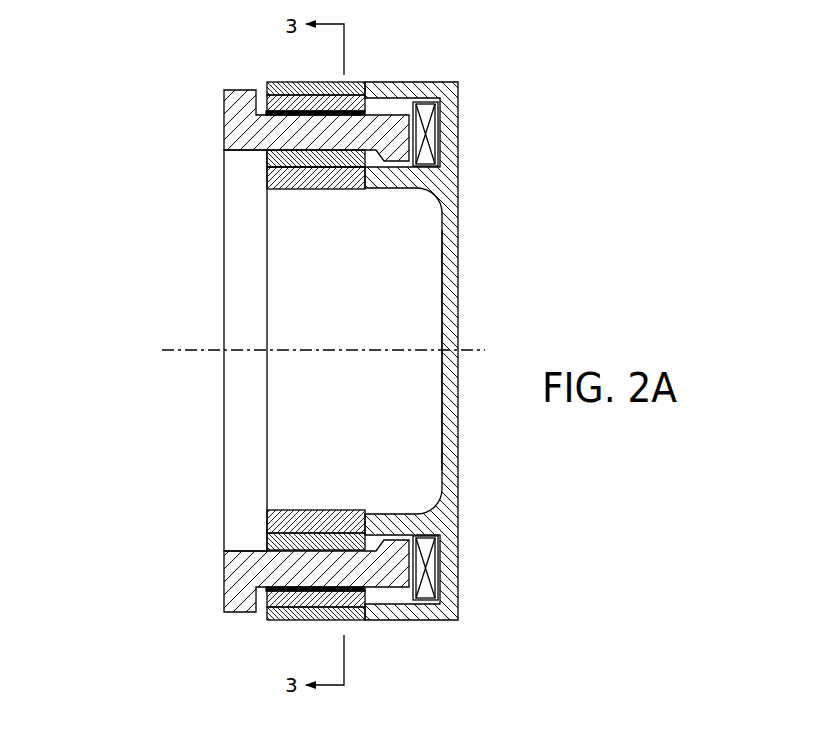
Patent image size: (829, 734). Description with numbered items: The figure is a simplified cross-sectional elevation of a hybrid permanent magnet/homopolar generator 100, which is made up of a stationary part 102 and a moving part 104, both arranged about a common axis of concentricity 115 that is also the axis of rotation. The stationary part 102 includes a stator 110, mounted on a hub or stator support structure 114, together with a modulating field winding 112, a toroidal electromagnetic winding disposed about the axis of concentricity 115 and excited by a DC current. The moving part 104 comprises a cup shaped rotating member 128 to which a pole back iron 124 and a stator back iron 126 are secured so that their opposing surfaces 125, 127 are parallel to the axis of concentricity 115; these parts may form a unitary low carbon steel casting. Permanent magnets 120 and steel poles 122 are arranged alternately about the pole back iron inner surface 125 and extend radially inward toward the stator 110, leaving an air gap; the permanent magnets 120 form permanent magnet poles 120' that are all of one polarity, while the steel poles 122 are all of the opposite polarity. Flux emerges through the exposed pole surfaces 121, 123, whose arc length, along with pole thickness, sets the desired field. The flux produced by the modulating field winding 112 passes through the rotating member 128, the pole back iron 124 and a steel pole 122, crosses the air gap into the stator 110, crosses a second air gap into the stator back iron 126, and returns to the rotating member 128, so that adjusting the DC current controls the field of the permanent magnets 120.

The hybrid permanent magnet/homopolar generator 100 is at (570, 73).
The stationary part 102 is at (148, 123).
The moving part 104 is at (543, 127).
The stator 110 is at (224, 91).
The modulating field winding 112 is at (438, 131).
The stator support structure 114 is at (267, 157).
The axis of concentricity 115 is at (472, 350).
The permanent magnets 120 is at (274, 330).
The permanent magnet poles 120' is at (274, 330).
The exposed pole surface 121 is at (262, 114).
The steel poles 122 is at (262, 604).
The exposed pole surface 123 is at (332, 167).
The pole back iron 124 is at (352, 83).
The pole back iron inner surface 125 is at (308, 83).
The stator back iron 126 is at (298, 189).
The opposing surface of stator back iron 127 is at (267, 168).
The rotating member 128 is at (464, 472).